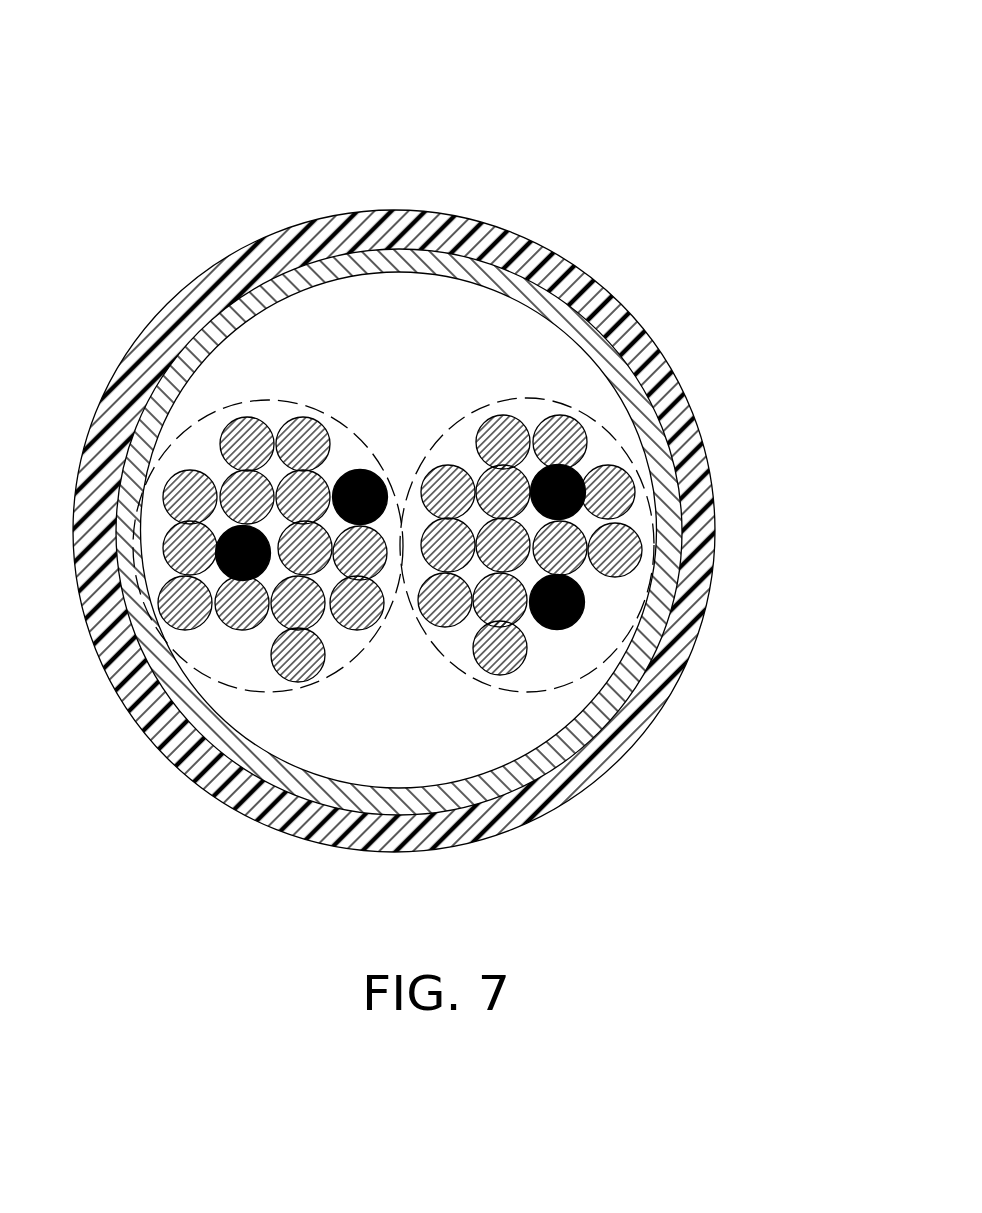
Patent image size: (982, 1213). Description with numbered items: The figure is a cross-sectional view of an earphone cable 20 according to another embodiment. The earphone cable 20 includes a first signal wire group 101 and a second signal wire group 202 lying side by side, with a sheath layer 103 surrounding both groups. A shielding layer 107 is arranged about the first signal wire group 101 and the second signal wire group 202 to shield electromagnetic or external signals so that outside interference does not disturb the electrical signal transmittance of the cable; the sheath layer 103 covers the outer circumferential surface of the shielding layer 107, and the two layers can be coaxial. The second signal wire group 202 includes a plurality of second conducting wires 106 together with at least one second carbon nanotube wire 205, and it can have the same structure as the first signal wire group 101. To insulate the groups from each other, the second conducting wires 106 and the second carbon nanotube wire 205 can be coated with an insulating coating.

The earphone cable 20 is at (433, 93).
The sheath layer 103 is at (478, 232).
The shielding layer 107 is at (557, 755).
The first signal wire group 101 is at (250, 398).
The second signal wire group 202 is at (795, 400).
The second carbon nanotube wire 205 is at (578, 478).
The second conducting wire 106 is at (610, 547).